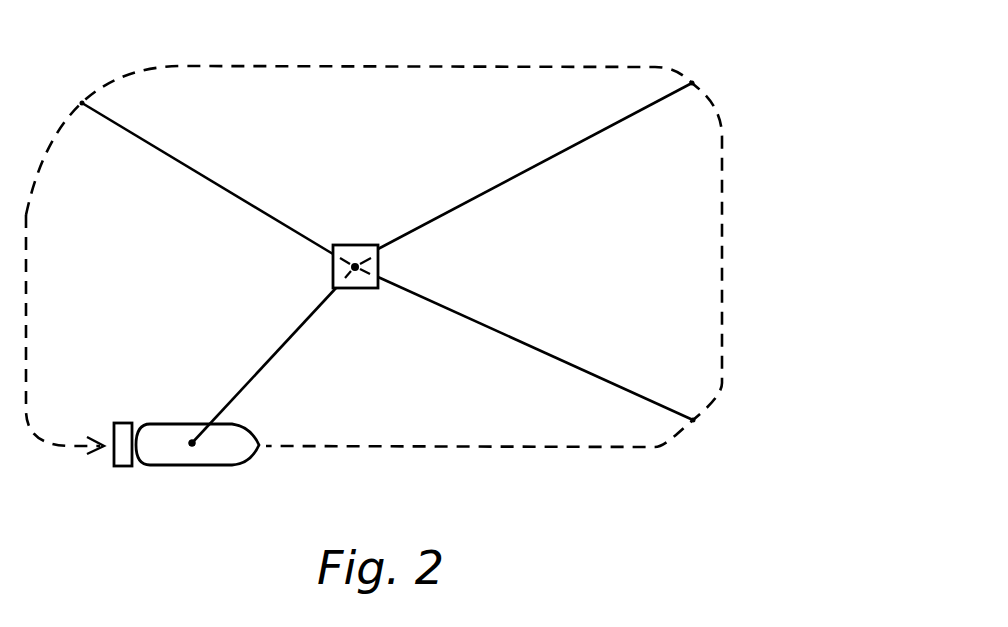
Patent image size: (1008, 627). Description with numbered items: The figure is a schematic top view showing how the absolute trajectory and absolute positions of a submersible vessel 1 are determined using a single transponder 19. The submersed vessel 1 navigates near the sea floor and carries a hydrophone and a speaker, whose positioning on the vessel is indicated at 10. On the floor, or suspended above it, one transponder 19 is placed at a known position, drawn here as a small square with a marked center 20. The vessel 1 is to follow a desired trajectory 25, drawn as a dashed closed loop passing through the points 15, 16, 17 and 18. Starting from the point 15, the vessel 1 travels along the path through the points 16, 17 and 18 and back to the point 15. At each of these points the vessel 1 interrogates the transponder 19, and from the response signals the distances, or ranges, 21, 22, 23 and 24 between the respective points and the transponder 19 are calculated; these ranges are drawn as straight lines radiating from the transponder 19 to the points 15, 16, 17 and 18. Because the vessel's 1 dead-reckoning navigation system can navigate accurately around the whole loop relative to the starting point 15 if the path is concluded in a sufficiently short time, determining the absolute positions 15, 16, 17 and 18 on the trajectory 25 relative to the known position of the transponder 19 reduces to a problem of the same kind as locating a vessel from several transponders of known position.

The submersible vessel 1 is at (221, 467).
The hydrophone and speaker positioning 10 is at (190, 447).
The point on trajectory 15 is at (186, 439).
The point on trajectory 16 is at (696, 441).
The point on trajectory 17 is at (702, 76).
The point on trajectory 18 is at (83, 101).
The transponder 19 is at (380, 265).
The transmitter position 20 is at (356, 260).
The distance (range) 21 is at (258, 372).
The distance (range) 22 is at (530, 340).
The distance (range) 23 is at (546, 160).
The distance (range) 24 is at (240, 192).
The trajectory 25 is at (537, 452).